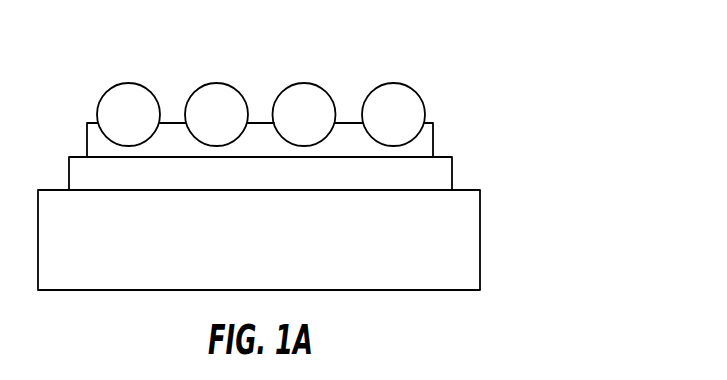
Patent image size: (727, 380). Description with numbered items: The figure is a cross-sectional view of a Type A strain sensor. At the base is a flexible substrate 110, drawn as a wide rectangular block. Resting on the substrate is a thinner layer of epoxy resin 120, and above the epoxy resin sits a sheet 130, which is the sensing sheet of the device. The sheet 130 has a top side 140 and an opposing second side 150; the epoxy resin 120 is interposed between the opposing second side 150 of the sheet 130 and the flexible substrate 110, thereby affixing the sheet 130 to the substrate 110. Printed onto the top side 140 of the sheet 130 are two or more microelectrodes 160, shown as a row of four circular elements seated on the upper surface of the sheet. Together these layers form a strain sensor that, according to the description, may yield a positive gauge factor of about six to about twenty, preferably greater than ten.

The flexible substrate 110 is at (480, 242).
The epoxy resin 120 is at (452, 178).
The sheet 130 is at (433, 142).
The top side 140 is at (257, 123).
The opposing second side 150 is at (342, 158).
The microelectrodes 160 is at (128, 82).